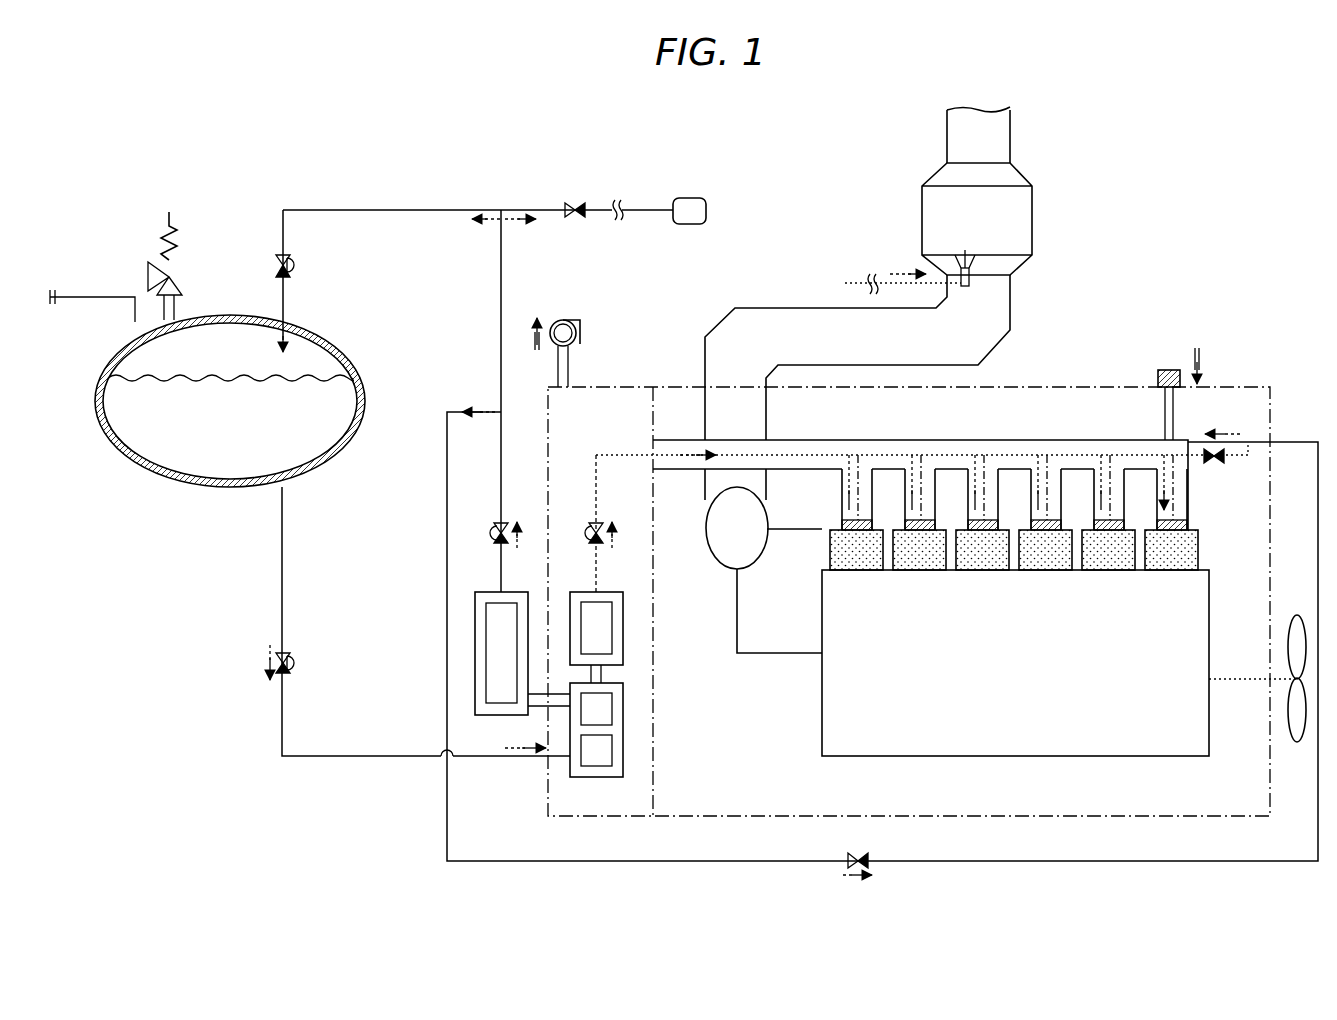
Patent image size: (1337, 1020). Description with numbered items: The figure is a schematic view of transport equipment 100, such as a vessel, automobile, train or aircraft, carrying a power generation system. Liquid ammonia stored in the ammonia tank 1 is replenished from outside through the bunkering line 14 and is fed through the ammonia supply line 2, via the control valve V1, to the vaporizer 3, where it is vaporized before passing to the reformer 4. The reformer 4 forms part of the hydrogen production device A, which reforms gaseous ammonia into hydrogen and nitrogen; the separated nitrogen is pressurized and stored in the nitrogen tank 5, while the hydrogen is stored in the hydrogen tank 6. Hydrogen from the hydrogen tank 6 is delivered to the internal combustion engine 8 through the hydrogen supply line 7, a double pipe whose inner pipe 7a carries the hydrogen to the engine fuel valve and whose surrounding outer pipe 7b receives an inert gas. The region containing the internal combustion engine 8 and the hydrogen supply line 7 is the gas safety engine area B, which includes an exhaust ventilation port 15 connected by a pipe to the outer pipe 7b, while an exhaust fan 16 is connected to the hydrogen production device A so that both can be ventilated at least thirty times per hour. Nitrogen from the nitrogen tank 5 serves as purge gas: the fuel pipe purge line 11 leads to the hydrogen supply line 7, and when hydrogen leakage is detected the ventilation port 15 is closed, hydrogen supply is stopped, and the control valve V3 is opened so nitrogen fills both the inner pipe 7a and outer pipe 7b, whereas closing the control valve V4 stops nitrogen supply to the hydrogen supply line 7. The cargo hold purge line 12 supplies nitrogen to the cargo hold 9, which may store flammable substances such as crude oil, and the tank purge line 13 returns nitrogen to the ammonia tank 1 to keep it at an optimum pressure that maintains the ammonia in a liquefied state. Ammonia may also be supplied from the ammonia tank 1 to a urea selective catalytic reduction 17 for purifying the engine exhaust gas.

The transport equipment 100 is at (152, 156).
The ammonia tank 1 is at (206, 490).
The ammonia supply line 2 is at (287, 545).
The vaporizer 3 is at (624, 750).
The reformer 4 is at (624, 708).
The nitrogen tank 5 is at (518, 592).
The hydrogen tank 6 is at (614, 592).
The hydrogen supply line 7 is at (1014, 411).
The inner pipe 7a is at (1060, 455).
The outer pipe 7b is at (1022, 447).
The internal combustion engine 8 is at (979, 524).
The cargo hold 9 is at (690, 198).
The fuel pipe purge line 11 is at (992, 863).
The cargo hold purge line 12 is at (640, 210).
The tank purge line 13 is at (305, 210).
The bunkering line 14 is at (120, 297).
The exhaust ventilation port 15 is at (1158, 380).
The exhaust fan 16 is at (580, 327).
The urea selective catalytic reduction 17 is at (990, 276).
The control valve V1 is at (290, 658).
The control valve V3 is at (1216, 464).
The control valve V4 is at (862, 857).
The hydrogen production device A is at (600, 818).
The gas safety engine area B is at (1200, 818).